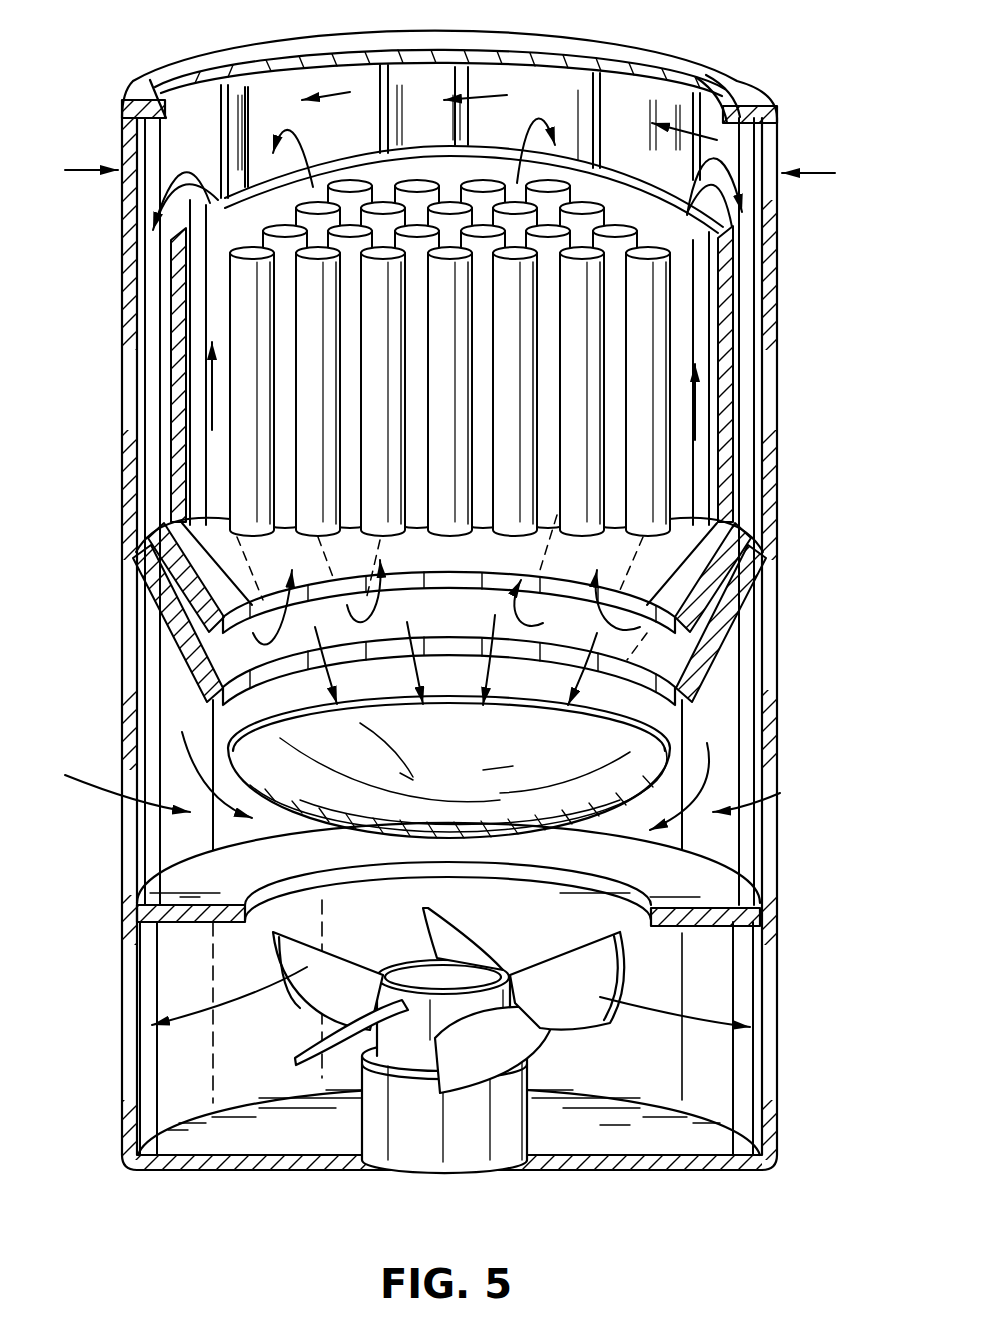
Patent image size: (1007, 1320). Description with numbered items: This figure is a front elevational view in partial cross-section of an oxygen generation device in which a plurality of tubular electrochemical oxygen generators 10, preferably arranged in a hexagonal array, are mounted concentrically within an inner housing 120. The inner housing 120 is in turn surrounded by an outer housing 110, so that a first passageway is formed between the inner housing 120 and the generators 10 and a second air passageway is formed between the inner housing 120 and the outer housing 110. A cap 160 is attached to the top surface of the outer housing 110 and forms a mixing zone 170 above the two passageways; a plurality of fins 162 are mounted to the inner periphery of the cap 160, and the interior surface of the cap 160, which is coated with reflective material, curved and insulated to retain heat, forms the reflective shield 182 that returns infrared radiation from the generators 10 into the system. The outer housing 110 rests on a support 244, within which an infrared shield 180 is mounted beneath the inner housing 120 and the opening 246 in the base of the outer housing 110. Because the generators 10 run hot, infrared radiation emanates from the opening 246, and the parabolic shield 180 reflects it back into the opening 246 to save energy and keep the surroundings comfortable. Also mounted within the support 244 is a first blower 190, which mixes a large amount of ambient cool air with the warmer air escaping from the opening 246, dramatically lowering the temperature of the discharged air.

The electrochemical oxygen generator 10 is at (656, 494).
The outer housing 110 is at (777, 358).
The inner housing 120 is at (730, 437).
The cap 160 is at (768, 212).
The fins 162 is at (690, 152).
The mixing zone 170 is at (557, 133).
The infrared shield 180 is at (642, 742).
The reflective shield 182 is at (745, 102).
The first blower 190 is at (608, 970).
The support 244 is at (768, 1060).
The opening 246 is at (462, 878).